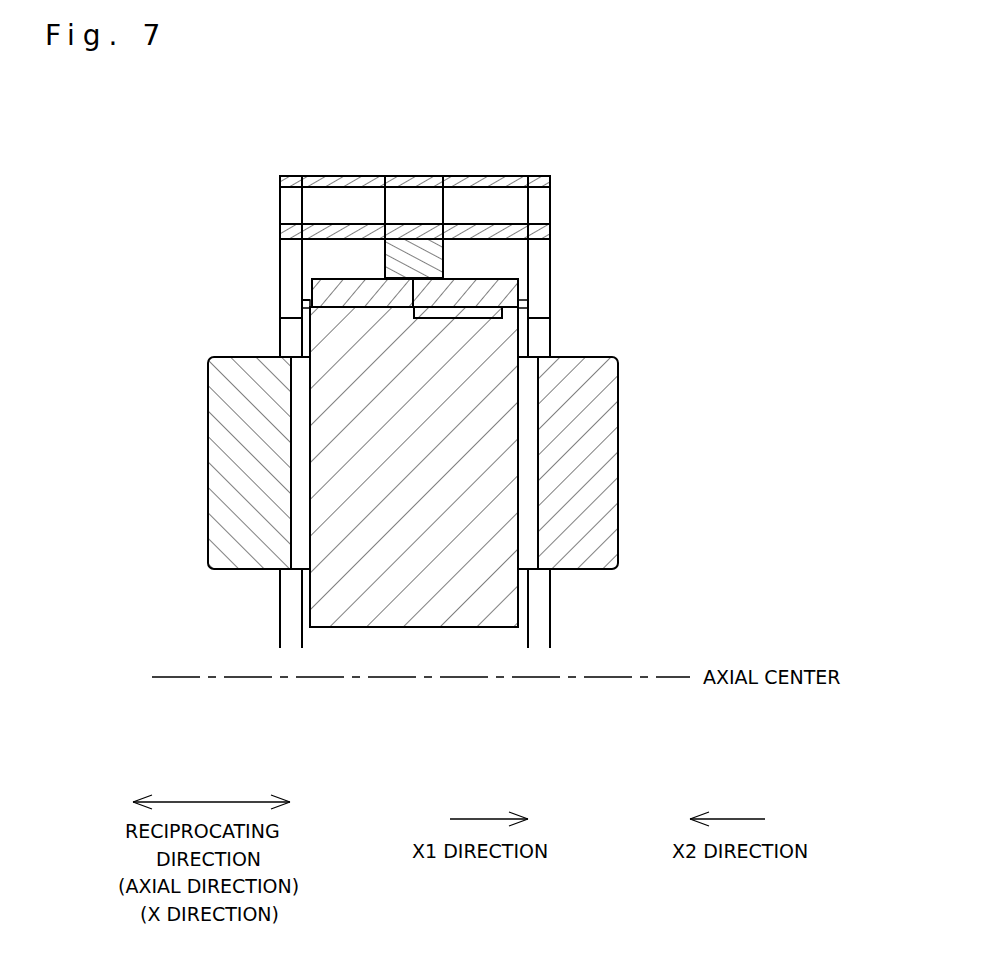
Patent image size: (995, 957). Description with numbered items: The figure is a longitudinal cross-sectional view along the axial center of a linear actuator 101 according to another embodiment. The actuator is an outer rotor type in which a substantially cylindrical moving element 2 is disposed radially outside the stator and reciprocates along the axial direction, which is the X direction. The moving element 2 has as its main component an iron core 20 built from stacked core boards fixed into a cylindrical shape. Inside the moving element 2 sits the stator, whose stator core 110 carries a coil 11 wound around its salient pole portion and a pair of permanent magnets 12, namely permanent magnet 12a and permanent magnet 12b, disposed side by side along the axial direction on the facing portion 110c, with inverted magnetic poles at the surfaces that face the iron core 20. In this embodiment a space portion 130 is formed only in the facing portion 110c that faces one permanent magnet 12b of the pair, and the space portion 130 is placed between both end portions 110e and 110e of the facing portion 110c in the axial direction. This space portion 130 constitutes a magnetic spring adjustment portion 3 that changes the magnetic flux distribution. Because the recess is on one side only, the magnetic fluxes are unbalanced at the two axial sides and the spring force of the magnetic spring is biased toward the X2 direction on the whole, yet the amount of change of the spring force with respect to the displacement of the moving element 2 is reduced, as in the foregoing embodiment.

The moving element 2 is at (560, 165).
The magnetic spring adjustment portion 3 is at (718, 288).
The coil 11 is at (225, 413).
The permanent magnets 12 is at (415, 277).
The permanent magnet 12a is at (323, 290).
The permanent magnet 12b is at (508, 284).
The iron core 20 is at (413, 230).
The linear actuator 101 is at (637, 553).
The stator core 110 is at (518, 593).
The facing portion 110c is at (302, 310).
The end portions 110e is at (358, 310).
The space portion 130 is at (483, 313).